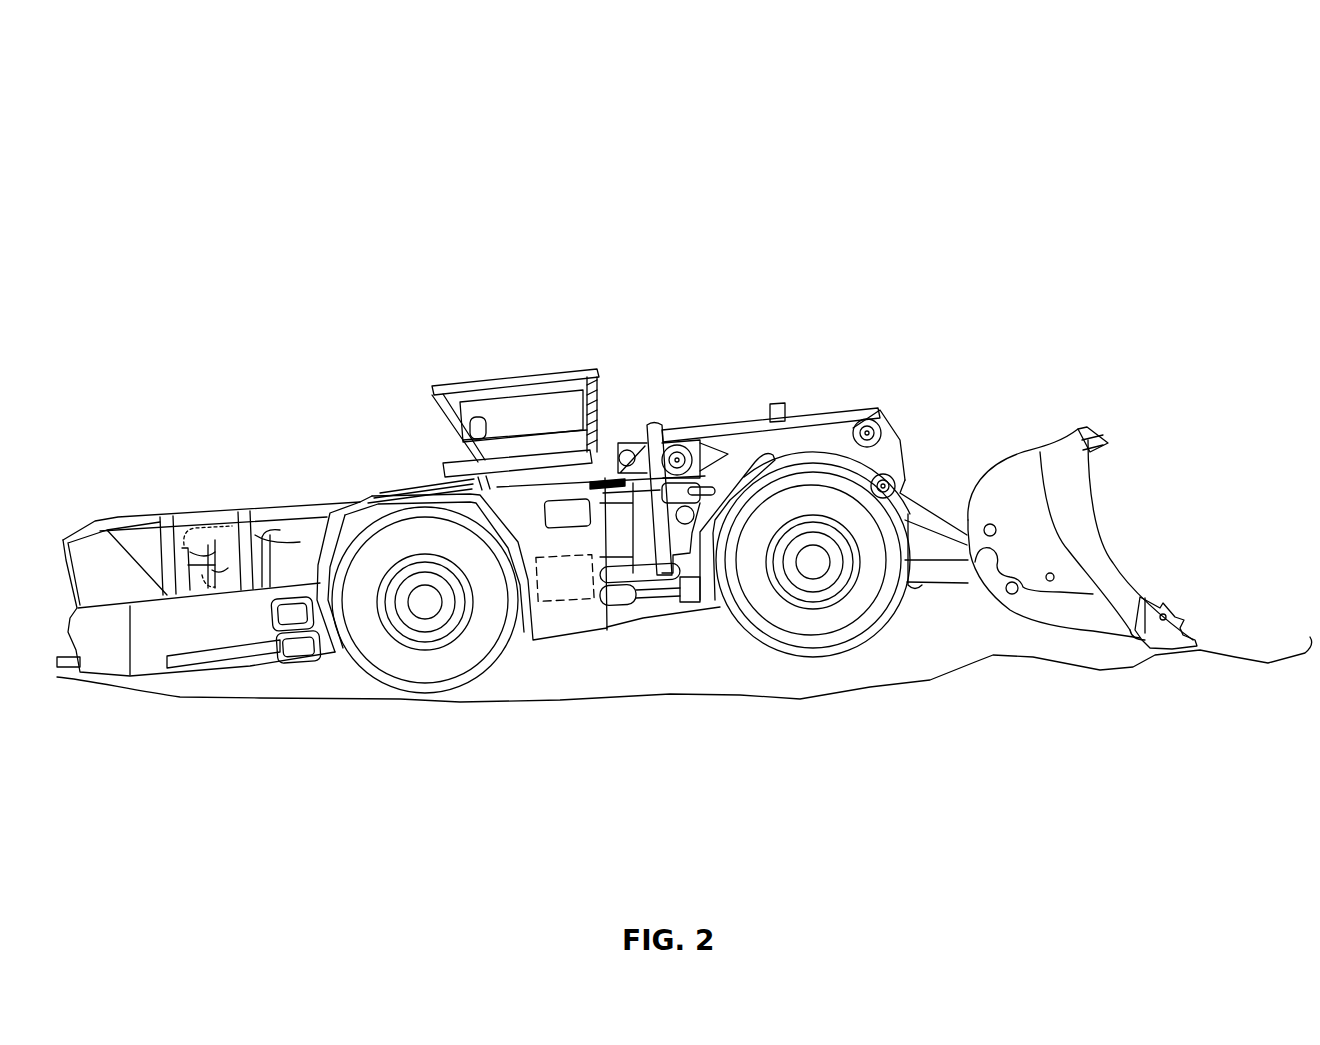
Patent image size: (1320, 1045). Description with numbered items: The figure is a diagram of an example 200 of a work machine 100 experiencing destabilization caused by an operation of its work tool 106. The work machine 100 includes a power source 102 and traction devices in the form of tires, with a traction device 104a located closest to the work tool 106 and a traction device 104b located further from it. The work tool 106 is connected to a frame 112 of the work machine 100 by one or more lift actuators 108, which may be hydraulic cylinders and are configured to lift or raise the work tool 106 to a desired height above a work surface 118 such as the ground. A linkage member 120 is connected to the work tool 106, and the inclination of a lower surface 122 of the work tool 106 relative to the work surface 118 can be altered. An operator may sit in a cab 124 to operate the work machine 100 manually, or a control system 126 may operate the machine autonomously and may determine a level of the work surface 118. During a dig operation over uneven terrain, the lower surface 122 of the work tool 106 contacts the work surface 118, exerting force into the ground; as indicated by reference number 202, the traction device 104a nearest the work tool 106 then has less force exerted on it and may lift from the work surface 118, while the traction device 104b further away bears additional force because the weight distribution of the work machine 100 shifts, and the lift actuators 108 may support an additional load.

The example 200 is at (180, 52).
The work machine 100 is at (350, 362).
The power source 102 is at (381, 576).
The traction device 104a is at (743, 622).
The traction device 104b is at (387, 683).
The work tool 106 is at (1035, 455).
The lift actuator 108 is at (910, 523).
The frame 112 is at (642, 620).
The work surface 118 is at (660, 697).
The linkage member 120 is at (950, 573).
The lower surface 122 is at (1143, 655).
The cab 124 is at (497, 382).
The control system 126 is at (565, 578).
The reference number 202 is at (872, 676).